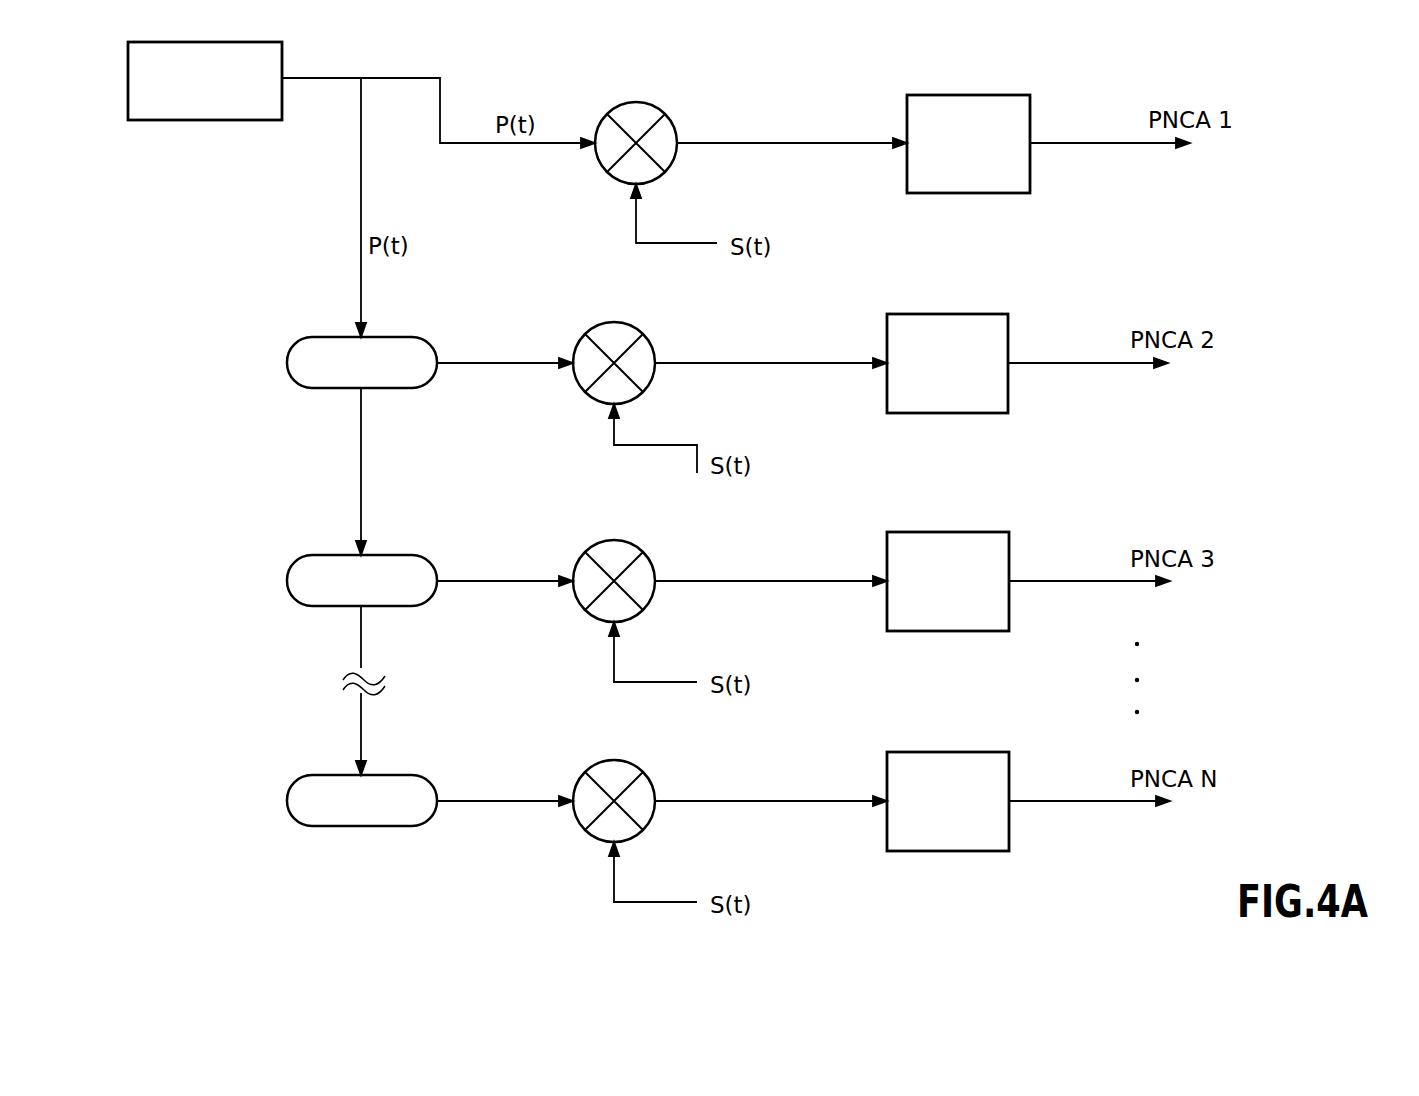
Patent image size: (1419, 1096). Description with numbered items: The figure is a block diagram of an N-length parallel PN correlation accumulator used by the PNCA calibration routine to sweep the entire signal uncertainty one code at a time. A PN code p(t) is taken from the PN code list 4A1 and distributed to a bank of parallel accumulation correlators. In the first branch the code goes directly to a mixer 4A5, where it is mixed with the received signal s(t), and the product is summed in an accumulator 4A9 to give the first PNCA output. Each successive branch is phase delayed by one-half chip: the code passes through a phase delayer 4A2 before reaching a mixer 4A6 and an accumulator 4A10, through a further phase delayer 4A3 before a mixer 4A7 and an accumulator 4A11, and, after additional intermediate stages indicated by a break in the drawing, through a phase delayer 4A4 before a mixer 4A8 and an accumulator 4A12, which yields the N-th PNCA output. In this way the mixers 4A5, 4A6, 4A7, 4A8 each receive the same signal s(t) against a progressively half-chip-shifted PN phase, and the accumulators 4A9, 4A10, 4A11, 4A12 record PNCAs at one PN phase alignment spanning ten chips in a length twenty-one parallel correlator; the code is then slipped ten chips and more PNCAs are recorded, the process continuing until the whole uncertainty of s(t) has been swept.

The PN code list 4A1 is at (205, 120).
The phase delayer 4A2 is at (287, 362).
The phase delayer 4A3 is at (287, 580).
The phase delayer 4A4 is at (287, 800).
The mixer 4A5 is at (637, 102).
The mixer 4A6 is at (635, 325).
The mixer 4A7 is at (635, 544).
The mixer 4A8 is at (635, 764).
The accumulator 4A9 is at (940, 95).
The accumulator 4A10 is at (920, 314).
The accumulator 4A11 is at (920, 532).
The accumulator 4A12 is at (920, 752).